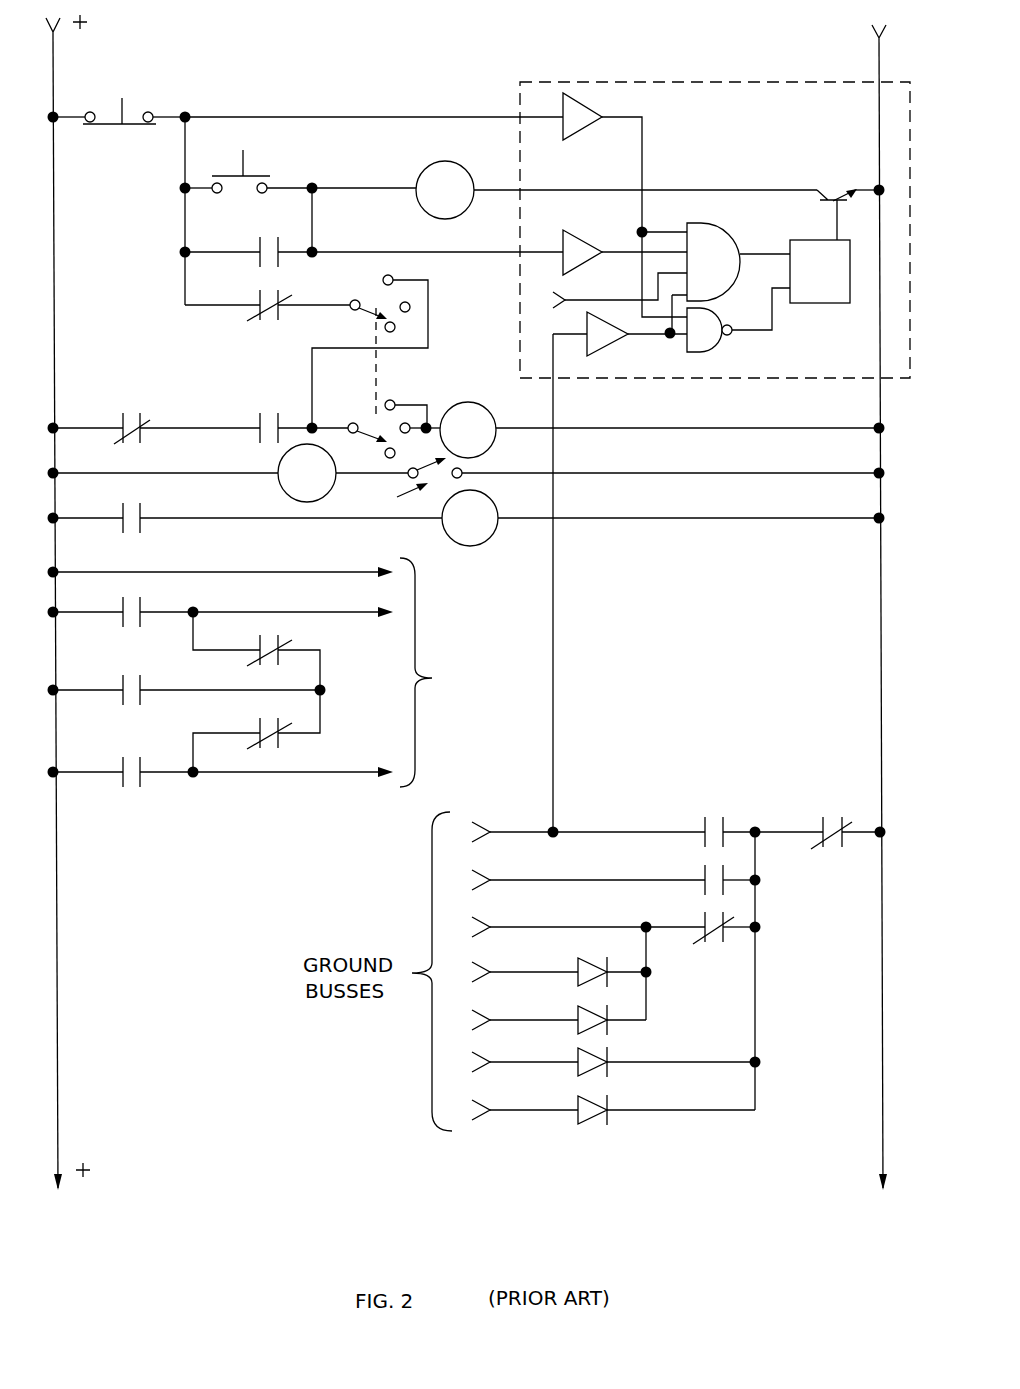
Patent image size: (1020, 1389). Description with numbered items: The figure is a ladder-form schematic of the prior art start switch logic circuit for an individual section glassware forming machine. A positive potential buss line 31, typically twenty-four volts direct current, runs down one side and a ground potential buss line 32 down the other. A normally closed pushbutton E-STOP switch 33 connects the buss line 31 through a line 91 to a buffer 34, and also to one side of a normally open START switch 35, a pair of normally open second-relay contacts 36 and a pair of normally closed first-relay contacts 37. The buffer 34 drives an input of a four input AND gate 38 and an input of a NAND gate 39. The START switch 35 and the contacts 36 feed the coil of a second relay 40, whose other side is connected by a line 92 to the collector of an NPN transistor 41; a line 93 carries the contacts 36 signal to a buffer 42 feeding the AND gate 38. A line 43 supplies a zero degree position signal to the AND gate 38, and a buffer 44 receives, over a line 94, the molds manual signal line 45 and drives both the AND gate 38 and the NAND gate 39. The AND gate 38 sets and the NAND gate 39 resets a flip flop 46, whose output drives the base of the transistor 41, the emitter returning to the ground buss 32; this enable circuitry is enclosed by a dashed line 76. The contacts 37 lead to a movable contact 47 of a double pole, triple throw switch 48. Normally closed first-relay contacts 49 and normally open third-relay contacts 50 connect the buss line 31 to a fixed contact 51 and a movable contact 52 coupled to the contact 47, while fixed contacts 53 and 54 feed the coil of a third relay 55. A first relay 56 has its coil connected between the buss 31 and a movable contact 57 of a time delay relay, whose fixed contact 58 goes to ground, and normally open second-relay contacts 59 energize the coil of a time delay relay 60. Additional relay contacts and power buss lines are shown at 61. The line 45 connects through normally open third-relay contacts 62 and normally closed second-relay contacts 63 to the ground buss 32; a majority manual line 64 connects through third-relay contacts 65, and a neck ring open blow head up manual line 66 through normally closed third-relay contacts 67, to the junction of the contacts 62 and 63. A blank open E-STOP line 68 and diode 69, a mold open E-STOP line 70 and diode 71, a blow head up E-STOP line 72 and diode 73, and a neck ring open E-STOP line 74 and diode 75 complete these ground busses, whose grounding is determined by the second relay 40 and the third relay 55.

The positive potential buss line 31 is at (58, 52).
The ground potential buss line 32 is at (879, 60).
The E-STOP switch 33 is at (122, 98).
The buffer 34 is at (578, 128).
The START switch 35 is at (255, 135).
The K2 relay contacts 36 is at (260, 252).
The K1 relay contacts 37 is at (260, 305).
The AND gate 38 is at (722, 238).
The NAND gate 39 is at (708, 348).
The K2 relay 40 is at (464, 170).
The NPN transistor 41 is at (826, 199).
The buffer 42 is at (584, 248).
The line 43 is at (612, 300).
The buffer 44 is at (608, 344).
The molds manual signal line 45 is at (532, 830).
The flip flop 46 is at (812, 303).
The movable contact 47 is at (350, 310).
The double pole, triple throw switch 48 is at (432, 362).
The K1 contacts 49 is at (143, 436).
The K3 contacts 50 is at (260, 422).
The fixed contact 51 is at (393, 276).
The movable contact 52 is at (380, 444).
The fixed contact 53 is at (400, 402).
The fixed contact 54 is at (403, 440).
The K3 relay 55 is at (490, 414).
The K1 relay 56 is at (284, 488).
The movable contact 57 is at (448, 462).
The fixed contact 58 is at (464, 476).
The K2 contacts 59 is at (143, 526).
The TD relay 60 is at (484, 540).
The additional contacts and power buss lines 61 is at (442, 723).
The K3 contacts 62 is at (705, 832).
The relay contacts 63 is at (823, 832).
The majority manual signal line 64 is at (532, 878).
The K3 relay contacts 65 is at (705, 880).
The neck ring open blow head up manual signal line 66 is at (532, 925).
The K3 relay contacts 67 is at (705, 927).
The blank open E-STOP signal line 68 is at (532, 970).
The diode 69 is at (622, 944).
The mold open E-STOP signal line 70 is at (532, 1018).
The diode 71 is at (612, 1026).
The blow head up E-STOP signal line 72 is at (532, 1060).
The diode 73 is at (612, 1068).
The neck ring open E-STOP signal line 74 is at (532, 1108).
The diode 75 is at (612, 1116).
The dashed line 76 is at (614, 82).
The line 91 is at (470, 116).
The line 92 is at (512, 192).
The line 93 is at (490, 254).
The line 94 is at (556, 414).